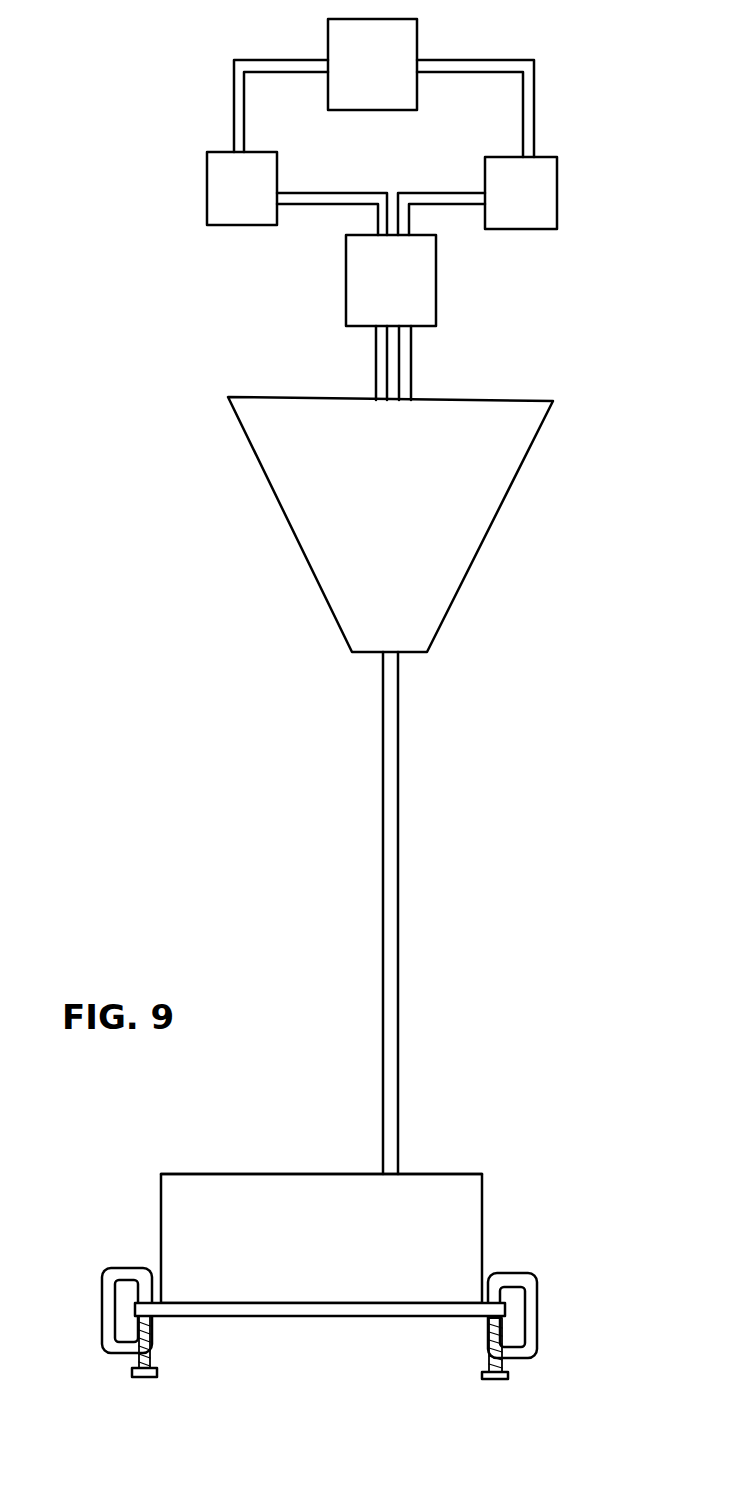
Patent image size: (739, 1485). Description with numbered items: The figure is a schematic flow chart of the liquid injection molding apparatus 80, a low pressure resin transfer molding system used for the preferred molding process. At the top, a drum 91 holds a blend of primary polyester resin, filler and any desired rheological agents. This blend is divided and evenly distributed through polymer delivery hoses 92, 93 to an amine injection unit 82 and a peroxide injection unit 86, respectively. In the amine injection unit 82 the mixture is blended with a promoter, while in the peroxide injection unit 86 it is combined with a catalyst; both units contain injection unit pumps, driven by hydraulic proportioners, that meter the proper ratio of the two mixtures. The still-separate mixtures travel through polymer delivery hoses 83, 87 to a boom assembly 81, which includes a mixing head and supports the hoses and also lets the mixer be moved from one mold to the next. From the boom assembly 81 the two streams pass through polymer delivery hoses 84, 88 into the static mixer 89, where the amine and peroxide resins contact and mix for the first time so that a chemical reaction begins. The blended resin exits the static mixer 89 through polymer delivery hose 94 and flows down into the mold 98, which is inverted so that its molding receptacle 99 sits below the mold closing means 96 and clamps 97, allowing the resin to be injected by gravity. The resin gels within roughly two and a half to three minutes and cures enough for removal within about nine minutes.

The liquid injection molding apparatus 80 is at (612, 308).
The boom assembly 81 is at (427, 283).
The amine injection unit 82 is at (207, 180).
The polymer delivery hose 83 is at (324, 199).
The polymer delivery hose 84 is at (380, 363).
The peroxide injection unit 86 is at (552, 183).
The polymer delivery hose 87 is at (440, 198).
The polymer delivery hose 88 is at (405, 362).
The static mixer 89 is at (293, 541).
The drum 91 is at (360, 97).
The polymer delivery hose 92 is at (238, 116).
The polymer delivery hose 93 is at (533, 95).
The polymer delivery hose 94 is at (398, 750).
The mold closing means 96 is at (280, 1317).
The clamps 97 is at (108, 1305).
The mold 98 is at (155, 1232).
The molding receptacle 99 is at (270, 1173).